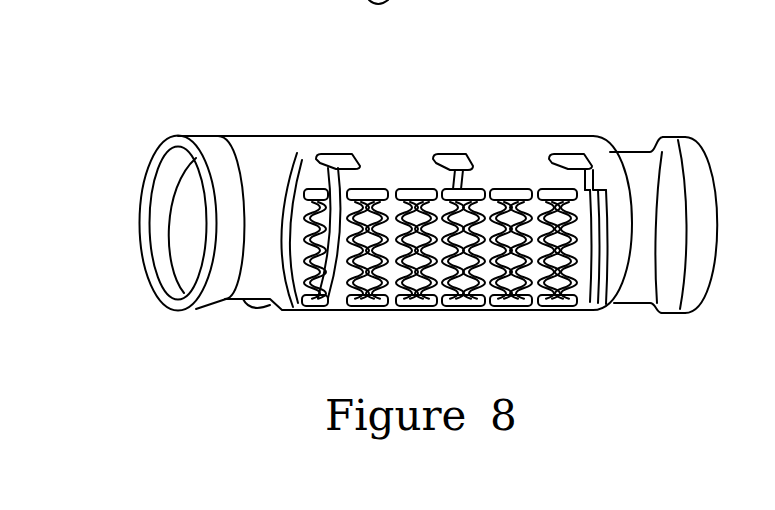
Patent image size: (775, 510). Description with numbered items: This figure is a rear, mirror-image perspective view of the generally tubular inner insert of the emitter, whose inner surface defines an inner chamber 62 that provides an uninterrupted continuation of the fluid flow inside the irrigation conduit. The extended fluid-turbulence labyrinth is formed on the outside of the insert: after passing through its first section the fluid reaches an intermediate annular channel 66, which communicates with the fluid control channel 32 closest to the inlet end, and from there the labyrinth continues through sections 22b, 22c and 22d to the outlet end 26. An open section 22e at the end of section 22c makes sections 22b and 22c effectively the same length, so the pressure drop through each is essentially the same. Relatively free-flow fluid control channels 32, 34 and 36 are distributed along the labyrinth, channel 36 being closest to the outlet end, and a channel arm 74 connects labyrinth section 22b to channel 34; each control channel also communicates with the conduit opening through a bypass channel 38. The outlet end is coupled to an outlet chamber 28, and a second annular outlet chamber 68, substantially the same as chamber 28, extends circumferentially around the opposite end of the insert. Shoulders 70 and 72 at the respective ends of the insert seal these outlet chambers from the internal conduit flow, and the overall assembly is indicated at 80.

The filter assembly 80 is at (293, 33).
The second annular outlet chamber 68 is at (248, 138).
The shoulder 70 is at (217, 160).
The inner chamber 62 is at (188, 225).
The bypass channel 38 is at (247, 172).
The labyrinth section 22d is at (302, 203).
The outlet end 26 is at (290, 300).
The open section 22e is at (326, 283).
The fluid control channel 36 is at (347, 157).
The labyrinth section 22c is at (407, 177).
The fluid control channel 34 is at (457, 160).
The channel arm 74 is at (447, 158).
The labyrinth section 22b is at (527, 176).
The fluid control channel 32 is at (569, 157).
The intermediate annular channel 66 is at (587, 272).
The outlet line or chamber 28 is at (631, 160).
The shoulder 72 is at (692, 275).